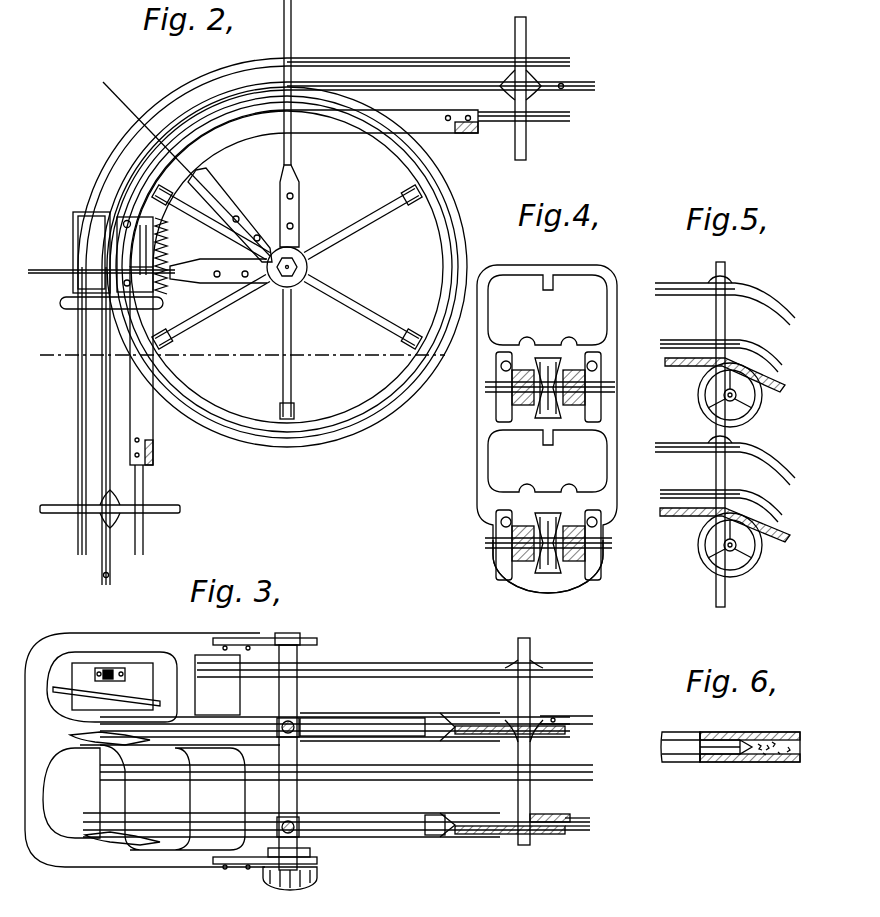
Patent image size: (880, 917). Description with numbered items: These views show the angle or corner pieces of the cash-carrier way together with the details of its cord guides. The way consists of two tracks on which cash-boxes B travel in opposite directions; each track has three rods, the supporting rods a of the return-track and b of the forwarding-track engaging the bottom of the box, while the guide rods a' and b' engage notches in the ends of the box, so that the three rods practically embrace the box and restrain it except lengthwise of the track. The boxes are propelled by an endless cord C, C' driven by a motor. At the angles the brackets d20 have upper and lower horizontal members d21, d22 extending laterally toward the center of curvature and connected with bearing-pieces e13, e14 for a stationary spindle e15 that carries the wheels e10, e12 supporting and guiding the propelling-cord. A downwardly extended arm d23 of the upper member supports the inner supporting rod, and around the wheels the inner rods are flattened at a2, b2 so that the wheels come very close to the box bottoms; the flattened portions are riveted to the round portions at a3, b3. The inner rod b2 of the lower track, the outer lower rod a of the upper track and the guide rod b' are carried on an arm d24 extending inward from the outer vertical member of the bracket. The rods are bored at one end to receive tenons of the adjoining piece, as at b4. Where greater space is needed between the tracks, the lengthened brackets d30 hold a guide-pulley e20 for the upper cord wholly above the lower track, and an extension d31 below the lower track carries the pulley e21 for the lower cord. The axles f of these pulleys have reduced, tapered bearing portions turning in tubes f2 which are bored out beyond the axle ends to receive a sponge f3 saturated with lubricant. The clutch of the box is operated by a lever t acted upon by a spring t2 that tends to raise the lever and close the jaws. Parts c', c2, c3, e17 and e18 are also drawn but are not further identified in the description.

In FIG. 2, the supporting rod of the return-track a is at (321, 302).
In FIG. 5, the supporting rod of the return-track a is at (721, 349).
In FIG. 3, the supporting rod of the return-track a is at (302, 710).
In FIG. 2, the guide rod of the return-track a' is at (335, 332).
In FIG. 5, the guide rod of the return-track a' is at (725, 299).
In FIG. 3, the guide rod of the return-track a' is at (349, 654).
In FIG. 2, the flattened portion of inner supporting-rod a2 is at (304, 188).
In FIG. 3, the flattened portion of inner supporting-rod a2 is at (266, 716).
In FIG. 2, the rivet connection a3 is at (293, 281).
In FIG. 3, the rivet connection a3 is at (400, 715).
In FIG. 5, the supporting rod of the forwarding-track b is at (721, 497).
In FIG. 3, the supporting rod of the forwarding-track b is at (328, 810).
In FIG. 5, the guide rod of the forwarding-track b' is at (725, 454).
In FIG. 3, the guide rod of the forwarding-track b' is at (331, 771).
In FIG. 3, the flattened inner rod of the lower track b2 is at (358, 820).
In FIG. 3, the rivet connection b3 is at (496, 820).
In FIG. 3, the bored rod end b4 is at (557, 816).
In FIG. 2, the cash-box B is at (74, 252).
In FIG. 3, the cash-box B is at (112, 686).
In FIG. 2, the propelling-cord C is at (520, 88).
In FIG. 5, the propelling-cord C is at (725, 375).
In FIG. 3, the propelling-cord C is at (318, 741).
In FIG. 5, the propelling-cord C' is at (725, 525).
In FIG. 3, the propelling-cord C' is at (312, 847).
In FIG. 2, the slide c' is at (135, 254).
In FIG. 3, the clamp c2 is at (100, 666).
In FIG. 2, the plate c3 is at (91, 252).
In FIG. 2, the angle bracket d20 is at (212, 131).
In FIG. 3, the angle bracket d20 is at (70, 634).
In FIG. 3, the upper horizontal member d21 is at (218, 636).
In FIG. 3, the lower horizontal member d22 is at (190, 862).
In FIG. 3, the downwardly-extended arm d23 is at (217, 685).
In FIG. 3, the inward-extending arm d24 is at (82, 760).
In FIG. 4, the lengthened track-supporting bracket d30 is at (547, 429).
In FIG. 5, the lengthened track-supporting bracket d30 is at (716, 322).
In FIG. 4, the bracket extension d31 is at (560, 566).
In FIG. 5, the bracket extension d31 is at (716, 572).
In FIG. 2, the guide-wheel e10 is at (381, 404).
In FIG. 3, the guide-wheel e10 is at (367, 716).
In FIG. 3, the lower guide-wheel e12 is at (434, 815).
In FIG. 2, the bearing-piece e13 is at (308, 266).
In FIG. 3, the bearing-piece e14 is at (312, 866).
In FIG. 3, the stationary spindle e15 is at (300, 656).
In FIG. 3, the gear e17 is at (290, 888).
In FIG. 3, the nut e18 is at (302, 639).
In FIG. 4, the guide-pulley e20 is at (548, 365).
In FIG. 5, the guide-pulley e20 is at (700, 400).
In FIG. 4, the lower-cord pulley e21 is at (548, 518).
In FIG. 5, the lower-cord pulley e21 is at (700, 548).
In FIG. 4, the pulley axle f is at (566, 386).
In FIG. 6, the pulley axle f is at (684, 732).
In FIG. 4, the bearing tube f2 is at (485, 388).
In FIG. 5, the bearing tube f2 is at (752, 400).
In FIG. 6, the sponge f3 is at (750, 747).
In FIG. 2, the clutch-operating lever t is at (68, 312).
In FIG. 3, the clutch-operating lever t is at (106, 686).
In FIG. 2, the spring t2 is at (211, 256).